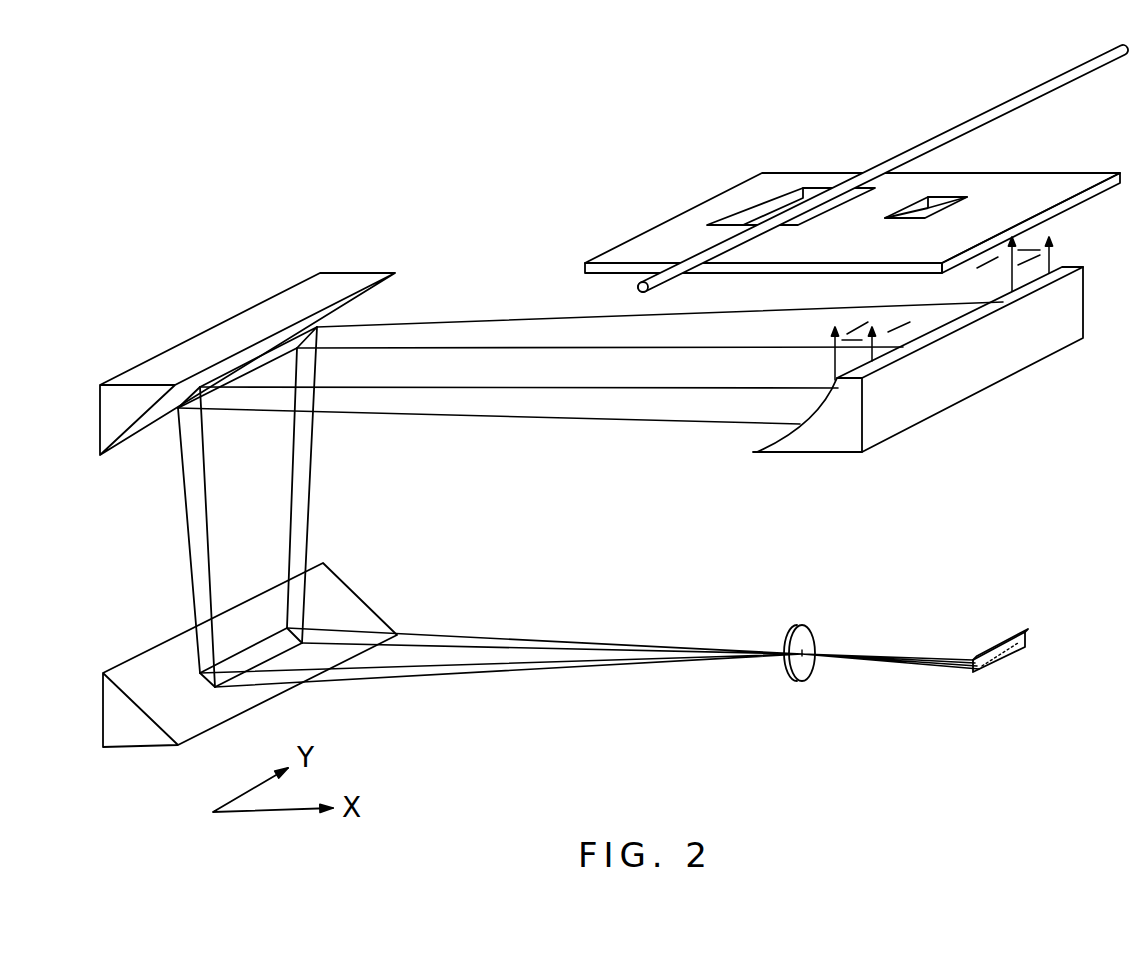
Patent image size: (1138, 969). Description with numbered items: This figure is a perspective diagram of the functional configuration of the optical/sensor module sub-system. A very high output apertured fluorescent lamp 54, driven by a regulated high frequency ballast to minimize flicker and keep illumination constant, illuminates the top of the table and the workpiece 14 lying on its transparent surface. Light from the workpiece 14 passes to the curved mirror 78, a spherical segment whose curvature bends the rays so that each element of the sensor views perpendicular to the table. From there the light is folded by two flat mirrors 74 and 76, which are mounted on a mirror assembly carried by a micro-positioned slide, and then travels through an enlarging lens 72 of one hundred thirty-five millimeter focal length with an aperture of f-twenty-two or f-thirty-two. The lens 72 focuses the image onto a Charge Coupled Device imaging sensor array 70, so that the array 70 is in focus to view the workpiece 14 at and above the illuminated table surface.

The workpiece 14 is at (688, 233).
The apertured fluorescent lamp 54 is at (1035, 93).
The CCD imaging sensor array 70 is at (1005, 658).
The enlarging lens 72 is at (803, 667).
The flat mirror 74 is at (138, 682).
The flat mirror 76 is at (145, 428).
The curved mirror 78 is at (777, 442).